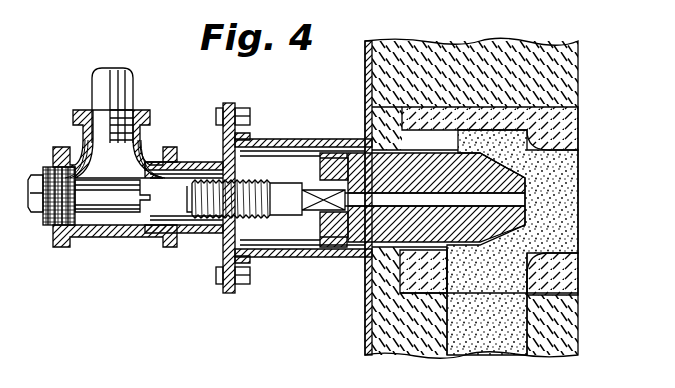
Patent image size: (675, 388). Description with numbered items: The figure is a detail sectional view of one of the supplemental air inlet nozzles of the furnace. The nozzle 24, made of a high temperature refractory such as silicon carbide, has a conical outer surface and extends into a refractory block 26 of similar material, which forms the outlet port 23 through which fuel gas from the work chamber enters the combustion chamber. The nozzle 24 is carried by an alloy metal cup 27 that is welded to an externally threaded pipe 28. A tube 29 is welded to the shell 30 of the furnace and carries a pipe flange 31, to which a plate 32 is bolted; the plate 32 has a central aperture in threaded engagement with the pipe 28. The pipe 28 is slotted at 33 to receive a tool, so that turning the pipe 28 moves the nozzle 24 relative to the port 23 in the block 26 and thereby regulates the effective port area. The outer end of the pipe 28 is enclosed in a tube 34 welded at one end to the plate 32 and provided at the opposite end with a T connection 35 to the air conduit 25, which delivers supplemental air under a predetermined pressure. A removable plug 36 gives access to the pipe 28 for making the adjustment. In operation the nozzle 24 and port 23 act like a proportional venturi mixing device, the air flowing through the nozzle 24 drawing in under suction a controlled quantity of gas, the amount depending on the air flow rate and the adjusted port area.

The port 23 is at (565, 165).
The nozzle 24 is at (530, 227).
The conduit 25 is at (130, 88).
The refractory block 26 is at (562, 268).
The alloy metal cup 27 is at (338, 245).
The externally threaded pipe 28 is at (283, 214).
The tube 29 is at (309, 258).
The shell 30 is at (366, 319).
The pipe flange 31 is at (252, 133).
The plate 32 is at (222, 135).
The slot 33 is at (140, 196).
The tube 34 is at (200, 233).
The T connection 35 is at (92, 247).
The removable plug 36 is at (42, 224).